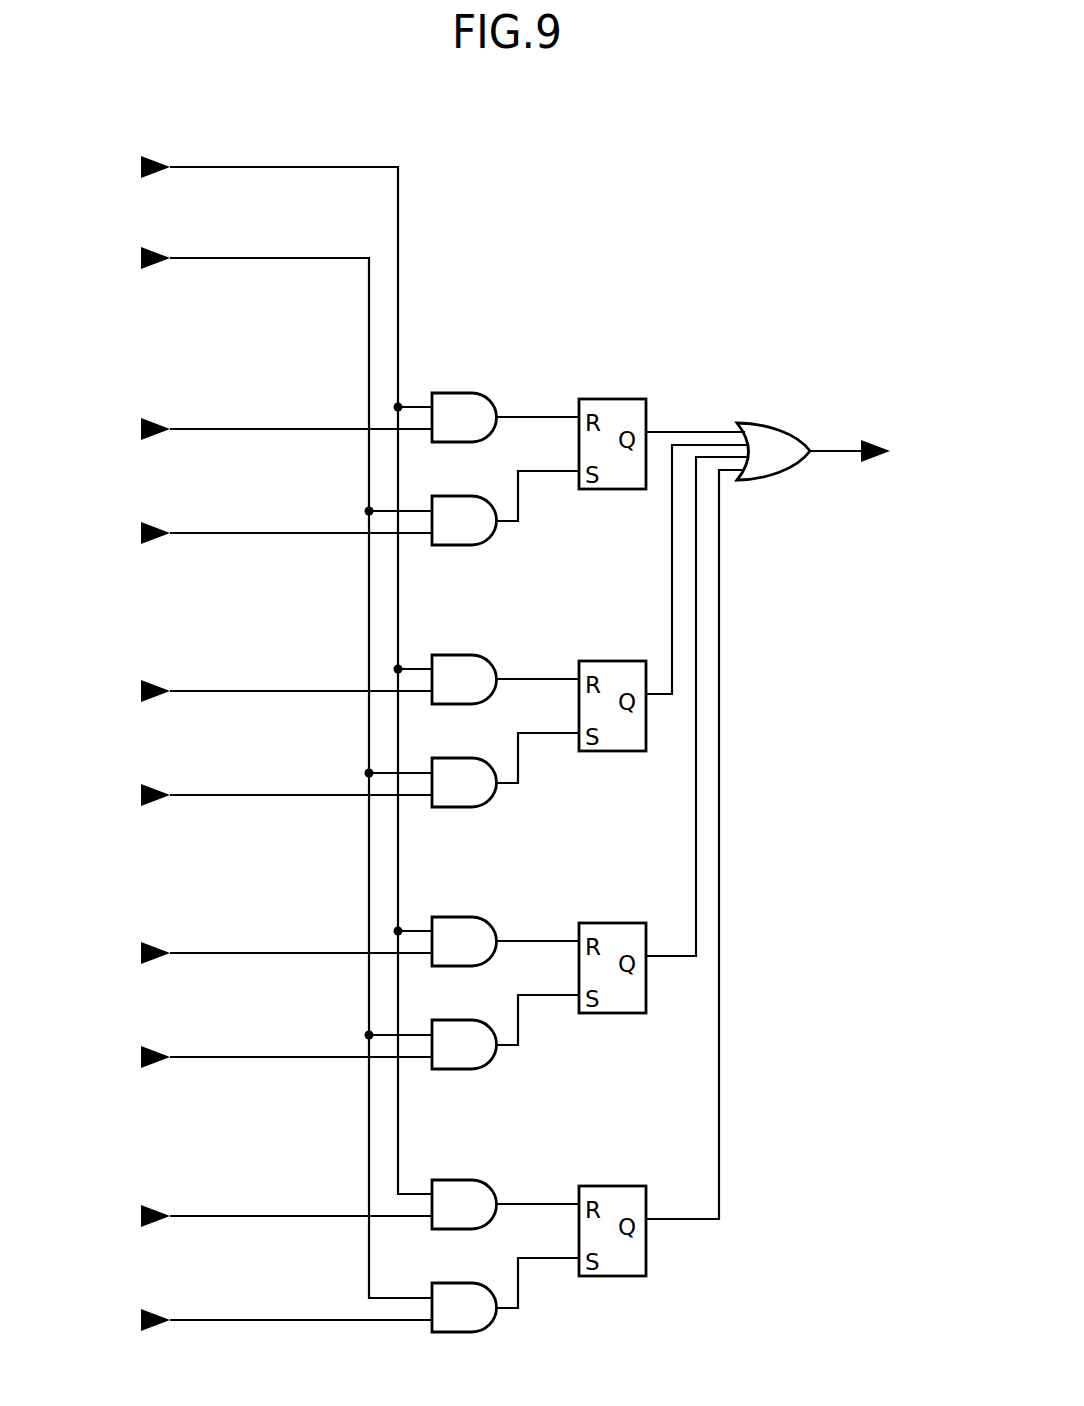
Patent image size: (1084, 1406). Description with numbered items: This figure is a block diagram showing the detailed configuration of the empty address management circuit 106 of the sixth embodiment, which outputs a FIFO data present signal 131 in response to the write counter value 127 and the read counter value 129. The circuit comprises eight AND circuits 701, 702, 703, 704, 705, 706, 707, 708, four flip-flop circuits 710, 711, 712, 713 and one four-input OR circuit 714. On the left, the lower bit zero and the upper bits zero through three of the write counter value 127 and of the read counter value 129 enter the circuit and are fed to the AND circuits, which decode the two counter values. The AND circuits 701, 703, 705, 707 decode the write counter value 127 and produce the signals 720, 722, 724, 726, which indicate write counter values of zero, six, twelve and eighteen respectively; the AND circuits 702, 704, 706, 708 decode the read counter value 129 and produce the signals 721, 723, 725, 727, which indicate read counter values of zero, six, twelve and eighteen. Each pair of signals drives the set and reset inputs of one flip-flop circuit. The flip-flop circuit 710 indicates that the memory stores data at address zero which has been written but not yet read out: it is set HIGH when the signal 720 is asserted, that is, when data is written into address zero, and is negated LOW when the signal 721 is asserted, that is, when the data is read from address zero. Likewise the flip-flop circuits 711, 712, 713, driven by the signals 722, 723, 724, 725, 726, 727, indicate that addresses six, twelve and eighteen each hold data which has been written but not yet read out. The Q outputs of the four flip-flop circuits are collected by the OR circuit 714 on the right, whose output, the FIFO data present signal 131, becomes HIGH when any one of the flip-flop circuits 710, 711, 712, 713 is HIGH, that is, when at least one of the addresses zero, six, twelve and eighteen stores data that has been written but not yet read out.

The empty address management circuit 106 is at (527, 118).
The write counter value 127 is at (217, 660).
The read counter value 129 is at (211, 759).
The FIFO data present signal 131 is at (880, 409).
The AND circuit 701 is at (464, 393).
The AND circuit 702 is at (464, 495).
The AND circuit 703 is at (464, 655).
The AND circuit 704 is at (464, 757).
The AND circuit 705 is at (464, 917).
The AND circuit 706 is at (464, 1019).
The AND circuit 707 is at (464, 1180).
The AND circuit 708 is at (464, 1282).
The flip-flop circuit 710 is at (662, 418).
The flip-flop circuit 711 is at (663, 598).
The flip-flop circuit 712 is at (663, 735).
The flip-flop circuit 713 is at (662, 873).
The OR circuit 714 is at (799, 425).
The signal 720 is at (538, 391).
The signal 721 is at (538, 469).
The signal 722 is at (538, 653).
The signal 723 is at (538, 731).
The signal 724 is at (538, 915).
The signal 725 is at (538, 993).
The signal 726 is at (538, 1178).
The signal 727 is at (538, 1256).